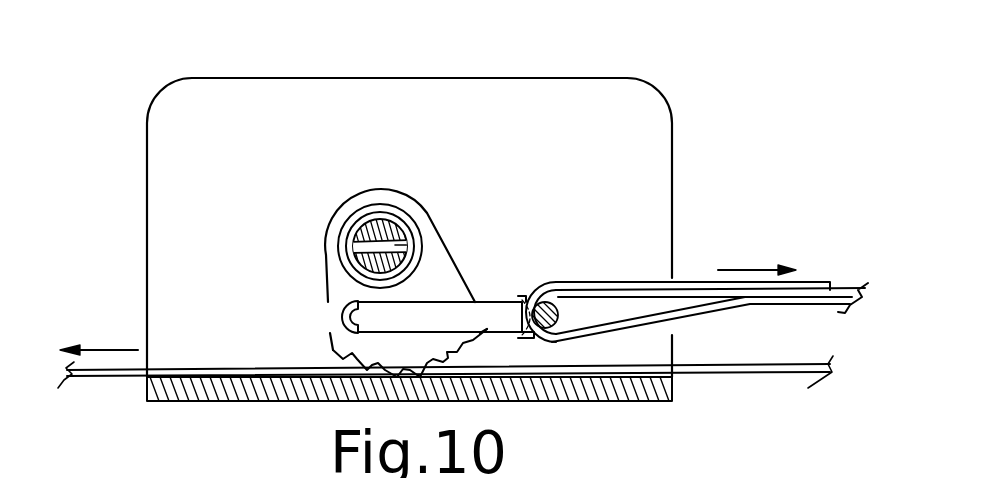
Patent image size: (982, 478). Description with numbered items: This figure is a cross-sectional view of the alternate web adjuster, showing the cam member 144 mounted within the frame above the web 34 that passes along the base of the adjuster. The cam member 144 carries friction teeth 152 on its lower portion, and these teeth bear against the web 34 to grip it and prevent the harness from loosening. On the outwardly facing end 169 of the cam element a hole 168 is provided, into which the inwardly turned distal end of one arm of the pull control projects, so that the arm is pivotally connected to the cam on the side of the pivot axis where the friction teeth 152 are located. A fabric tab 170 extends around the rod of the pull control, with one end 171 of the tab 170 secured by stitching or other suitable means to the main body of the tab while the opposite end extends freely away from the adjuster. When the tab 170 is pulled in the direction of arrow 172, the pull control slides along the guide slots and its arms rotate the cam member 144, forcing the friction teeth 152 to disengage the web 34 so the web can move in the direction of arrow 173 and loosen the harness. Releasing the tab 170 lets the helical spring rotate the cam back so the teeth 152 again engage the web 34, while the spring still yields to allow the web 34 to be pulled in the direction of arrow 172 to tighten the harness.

The web 34 is at (99, 380).
The cam member 144 is at (355, 200).
The friction teeth 152 is at (325, 352).
The hole 168 is at (342, 317).
The end of cam element 169 is at (432, 218).
The fabric tab 170 is at (835, 288).
The end of tab 171 is at (757, 307).
The arrow 172 is at (757, 260).
The arrow 173 is at (102, 340).